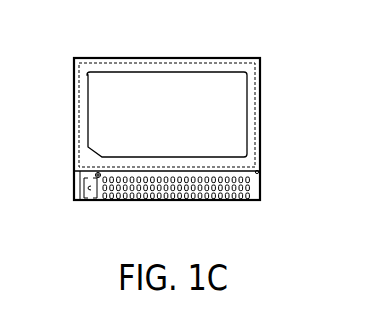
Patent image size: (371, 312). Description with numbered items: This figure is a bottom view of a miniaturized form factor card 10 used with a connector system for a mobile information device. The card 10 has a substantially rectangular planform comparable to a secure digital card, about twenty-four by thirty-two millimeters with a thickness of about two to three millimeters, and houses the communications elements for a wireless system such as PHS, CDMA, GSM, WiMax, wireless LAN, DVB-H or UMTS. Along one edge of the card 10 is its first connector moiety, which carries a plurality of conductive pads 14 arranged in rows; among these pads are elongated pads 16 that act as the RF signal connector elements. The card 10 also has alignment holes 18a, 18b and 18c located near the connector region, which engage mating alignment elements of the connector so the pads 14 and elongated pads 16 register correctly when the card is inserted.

The miniaturized form factor card 10 is at (262, 78).
The conductive pads 14 is at (197, 198).
The elongated pads 16 is at (83, 200).
The alignment hole 18a is at (73, 178).
The alignment hole 18b is at (96, 173).
The alignment hole 18c is at (260, 171).